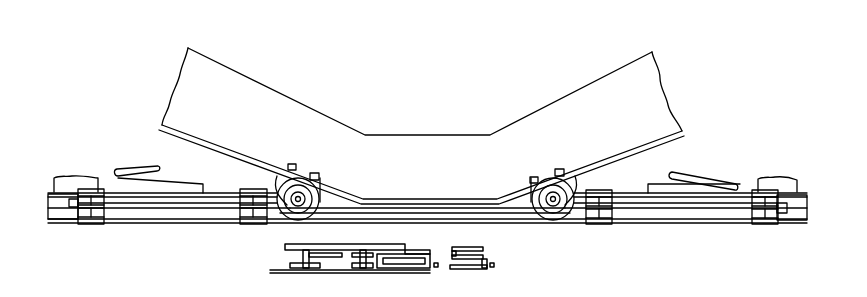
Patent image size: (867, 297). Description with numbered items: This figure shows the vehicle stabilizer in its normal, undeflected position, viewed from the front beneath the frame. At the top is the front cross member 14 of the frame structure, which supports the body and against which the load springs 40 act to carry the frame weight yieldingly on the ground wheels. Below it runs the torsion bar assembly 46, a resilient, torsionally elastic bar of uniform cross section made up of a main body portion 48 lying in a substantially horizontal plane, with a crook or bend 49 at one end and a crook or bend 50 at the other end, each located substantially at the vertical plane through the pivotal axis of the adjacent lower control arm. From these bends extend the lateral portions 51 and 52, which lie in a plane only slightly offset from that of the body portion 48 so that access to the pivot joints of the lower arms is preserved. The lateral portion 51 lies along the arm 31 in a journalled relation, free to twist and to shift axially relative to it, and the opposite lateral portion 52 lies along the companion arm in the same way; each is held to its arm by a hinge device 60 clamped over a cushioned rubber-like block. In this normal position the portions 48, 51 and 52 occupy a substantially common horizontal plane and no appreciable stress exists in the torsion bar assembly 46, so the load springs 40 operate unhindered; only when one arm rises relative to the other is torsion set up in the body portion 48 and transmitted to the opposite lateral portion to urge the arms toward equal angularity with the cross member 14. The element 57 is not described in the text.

The front cross member 14 is at (412, 150).
The load spring 40 is at (142, 139).
The arm 31 is at (63, 213).
The lateral portion 51 is at (190, 207).
The crook or bend 49 is at (308, 220).
The main body portion 48 is at (400, 215).
The torsion bar assembly 46 is at (463, 225).
The crook or bend 50 is at (555, 207).
The hinge device 60 is at (603, 216).
The right guide rod 57 is at (688, 210).
The lateral portion 52 is at (789, 214).